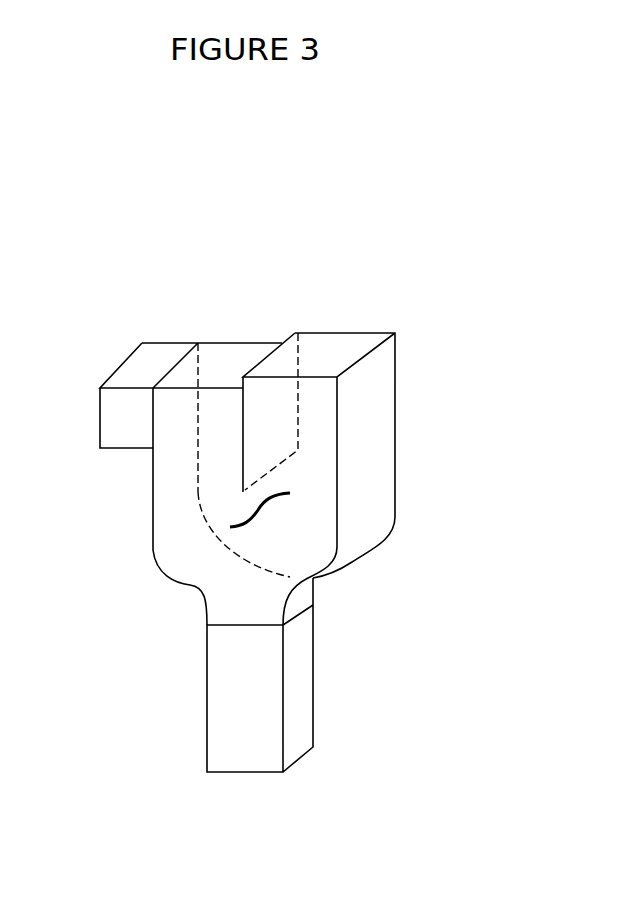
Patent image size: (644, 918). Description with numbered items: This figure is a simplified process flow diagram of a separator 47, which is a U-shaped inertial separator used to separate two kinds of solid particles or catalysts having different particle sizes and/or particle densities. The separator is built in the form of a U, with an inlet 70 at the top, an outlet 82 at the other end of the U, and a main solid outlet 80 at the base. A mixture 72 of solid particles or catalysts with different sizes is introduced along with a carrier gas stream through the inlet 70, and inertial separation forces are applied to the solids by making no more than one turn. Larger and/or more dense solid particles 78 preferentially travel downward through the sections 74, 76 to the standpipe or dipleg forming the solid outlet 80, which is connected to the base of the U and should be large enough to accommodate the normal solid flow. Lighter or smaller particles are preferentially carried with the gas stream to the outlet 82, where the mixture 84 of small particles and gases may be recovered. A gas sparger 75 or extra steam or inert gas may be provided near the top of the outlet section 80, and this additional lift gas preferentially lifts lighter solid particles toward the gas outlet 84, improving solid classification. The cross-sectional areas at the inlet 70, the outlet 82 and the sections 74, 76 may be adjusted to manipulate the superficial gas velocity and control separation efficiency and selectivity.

The separator 47 is at (457, 520).
The inlet 70 is at (357, 345).
The mixture 72 is at (338, 324).
The section 74 is at (352, 567).
The gas sparger 75 is at (289, 637).
The section 76 is at (197, 563).
The larger and/or more dense solid particles 78 is at (246, 713).
The main solid outlet 80 is at (253, 770).
The outlet 82 is at (115, 372).
The gas outlet 84 is at (90, 410).